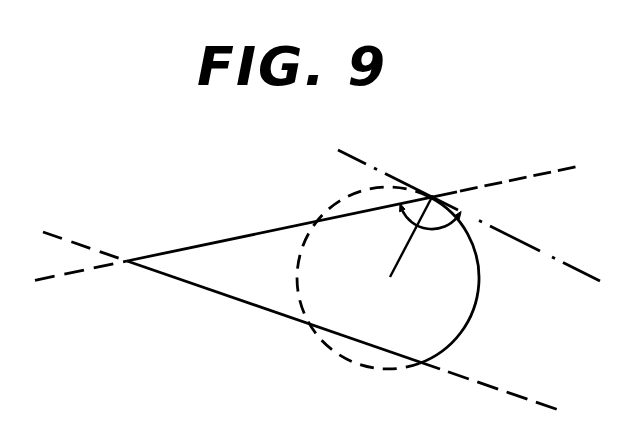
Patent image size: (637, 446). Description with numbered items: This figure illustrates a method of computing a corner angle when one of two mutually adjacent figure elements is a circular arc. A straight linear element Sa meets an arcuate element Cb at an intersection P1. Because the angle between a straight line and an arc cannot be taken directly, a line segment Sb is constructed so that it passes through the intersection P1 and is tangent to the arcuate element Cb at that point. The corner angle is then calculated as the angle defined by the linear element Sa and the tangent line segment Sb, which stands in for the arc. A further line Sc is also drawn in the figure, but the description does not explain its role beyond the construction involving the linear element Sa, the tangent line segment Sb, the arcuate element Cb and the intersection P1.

The linear element Sa is at (232, 237).
The line segment Sb is at (533, 246).
The line Sc (second line) Sc is at (243, 307).
The arcuate element Cb is at (473, 310).
The intersection P1 is at (433, 192).